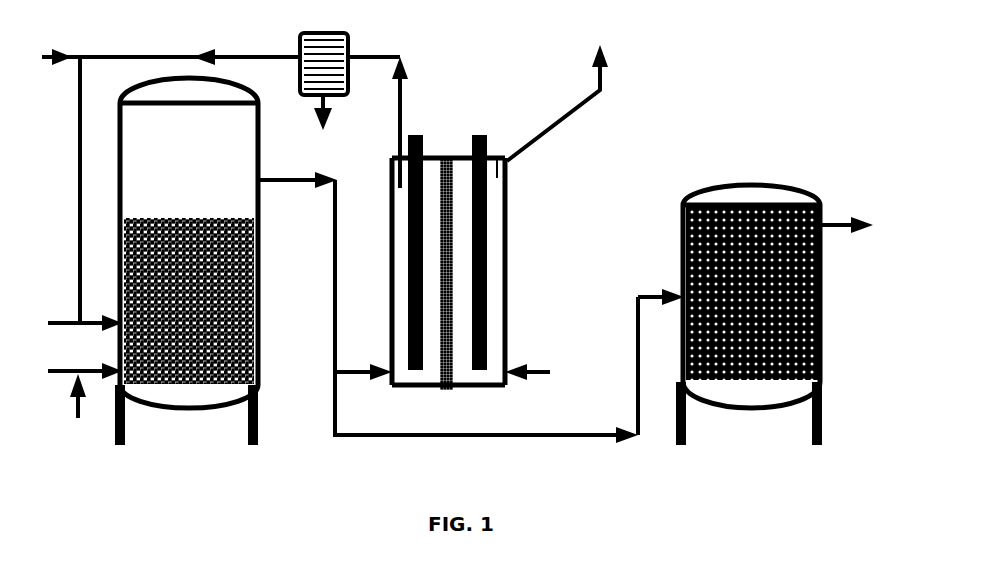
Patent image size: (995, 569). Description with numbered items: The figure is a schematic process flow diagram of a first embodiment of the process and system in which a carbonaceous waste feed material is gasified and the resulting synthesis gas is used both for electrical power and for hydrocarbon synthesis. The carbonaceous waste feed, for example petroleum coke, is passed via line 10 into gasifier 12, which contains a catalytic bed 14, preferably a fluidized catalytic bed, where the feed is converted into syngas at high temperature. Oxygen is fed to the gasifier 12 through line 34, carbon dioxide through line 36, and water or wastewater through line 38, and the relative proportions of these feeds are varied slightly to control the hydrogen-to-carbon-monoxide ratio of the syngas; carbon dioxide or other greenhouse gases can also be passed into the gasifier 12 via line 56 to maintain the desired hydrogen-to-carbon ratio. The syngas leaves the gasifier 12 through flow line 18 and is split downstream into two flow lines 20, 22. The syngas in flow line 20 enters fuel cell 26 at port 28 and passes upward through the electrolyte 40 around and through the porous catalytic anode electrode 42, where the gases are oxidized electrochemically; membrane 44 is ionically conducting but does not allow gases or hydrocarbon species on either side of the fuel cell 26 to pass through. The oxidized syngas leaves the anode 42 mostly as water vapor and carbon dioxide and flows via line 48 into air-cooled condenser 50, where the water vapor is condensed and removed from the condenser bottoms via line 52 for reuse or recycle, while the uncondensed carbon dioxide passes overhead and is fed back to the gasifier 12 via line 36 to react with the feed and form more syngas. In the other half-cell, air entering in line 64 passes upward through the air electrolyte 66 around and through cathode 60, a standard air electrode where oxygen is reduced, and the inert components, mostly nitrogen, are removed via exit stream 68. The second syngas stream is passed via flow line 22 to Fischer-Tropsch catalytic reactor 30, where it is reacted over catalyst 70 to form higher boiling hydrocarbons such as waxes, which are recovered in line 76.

The line 10 is at (103, 366).
The gasifier 12 is at (259, 150).
The catalytic bed 14 is at (222, 352).
The flow line 18 is at (283, 183).
The flow line 20 is at (353, 364).
The flow line 22 is at (508, 378).
The fuel cell 26 is at (507, 303).
The port 28 is at (400, 390).
The Fischer-Tropsch catalytic reactor 30 is at (822, 351).
The line 34 is at (63, 320).
The line 36 is at (78, 200).
The line 38 is at (70, 406).
The electrolyte 40 is at (428, 268).
The porous catalytic anode electrode 42 is at (425, 146).
The membrane 44 is at (452, 317).
The line 48 is at (387, 111).
The air-cooled condenser 50 is at (324, 53).
The line 52 is at (335, 111).
The line 56 is at (50, 52).
The cathode 60 is at (488, 145).
The line 64 is at (546, 377).
The air electrolyte 66 is at (490, 343).
The exit stream 68 is at (560, 90).
The catalyst 70 is at (747, 237).
The line 76 is at (862, 228).